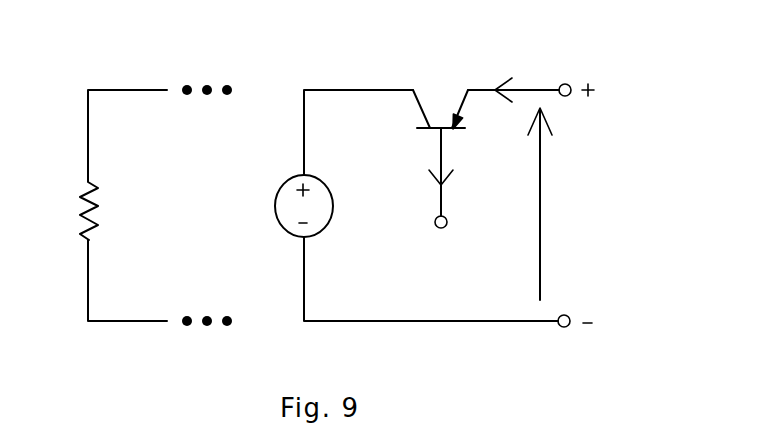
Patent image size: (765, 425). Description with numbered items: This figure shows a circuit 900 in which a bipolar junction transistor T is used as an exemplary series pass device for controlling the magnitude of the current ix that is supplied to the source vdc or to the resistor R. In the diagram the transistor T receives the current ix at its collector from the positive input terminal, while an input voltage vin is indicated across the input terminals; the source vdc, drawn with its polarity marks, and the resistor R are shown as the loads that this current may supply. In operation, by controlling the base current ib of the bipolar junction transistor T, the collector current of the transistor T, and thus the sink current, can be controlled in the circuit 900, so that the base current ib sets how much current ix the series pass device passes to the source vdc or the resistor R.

The circuit 900 is at (374, 168).
The resistor R is at (103, 205).
The bipolar junction transistor T is at (440, 79).
The source vdc is at (392, 205).
The base current ib is at (422, 178).
The current ix is at (531, 68).
The input voltage vin is at (560, 217).